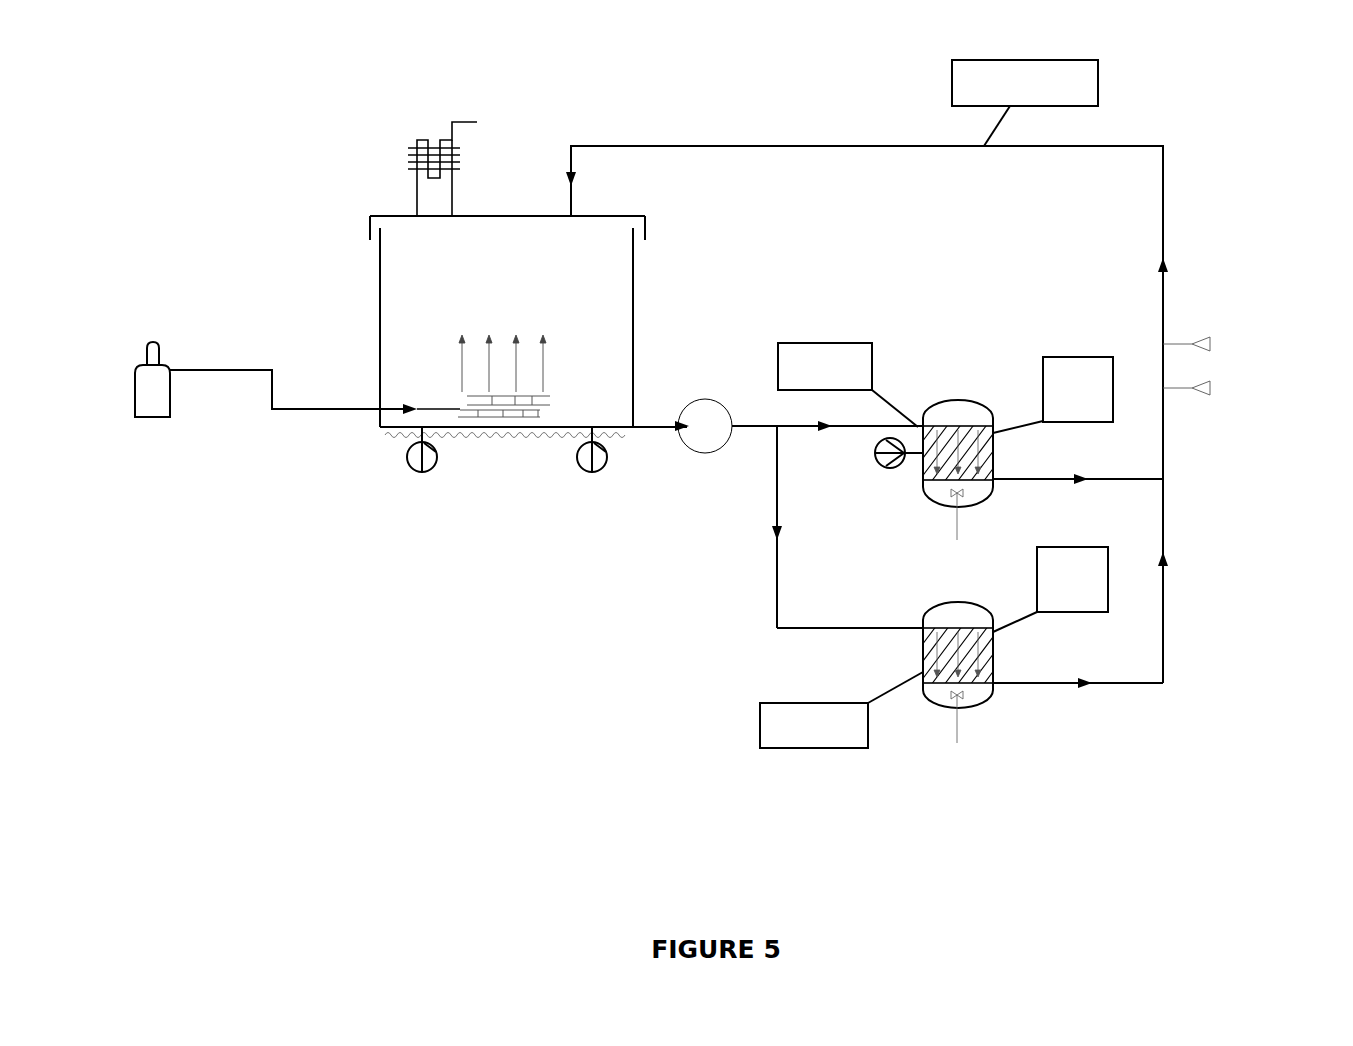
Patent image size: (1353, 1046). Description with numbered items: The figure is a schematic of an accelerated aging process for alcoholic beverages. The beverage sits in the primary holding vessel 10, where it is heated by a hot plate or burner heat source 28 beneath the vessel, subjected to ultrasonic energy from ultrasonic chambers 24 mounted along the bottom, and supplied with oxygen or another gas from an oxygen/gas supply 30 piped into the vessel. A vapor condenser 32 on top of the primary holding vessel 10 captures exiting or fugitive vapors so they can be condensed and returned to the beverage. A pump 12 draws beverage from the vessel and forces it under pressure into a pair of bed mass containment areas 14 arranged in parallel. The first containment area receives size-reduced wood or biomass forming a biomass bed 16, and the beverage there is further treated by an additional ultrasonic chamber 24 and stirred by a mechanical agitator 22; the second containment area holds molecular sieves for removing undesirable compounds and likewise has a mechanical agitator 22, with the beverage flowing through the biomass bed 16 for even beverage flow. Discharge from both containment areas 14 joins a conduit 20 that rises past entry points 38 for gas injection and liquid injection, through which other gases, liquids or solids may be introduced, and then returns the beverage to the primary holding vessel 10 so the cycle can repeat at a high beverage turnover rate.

The primary holding vessel 10 is at (527, 216).
The pump 12 is at (705, 453).
The bed mass containment areas 14 is at (922, 489).
The biomass bed 16 is at (993, 453).
The conduit 20 is at (806, 146).
The mechanical agitator 22 is at (964, 494).
The ultrasonic chambers/transducers 24 is at (408, 451).
The hot plate/burner (heat source) 28 is at (498, 435).
The oxygen/gas supply 30 is at (137, 363).
The vapor condenser 32 is at (412, 160).
The entry points 38 is at (1206, 342).